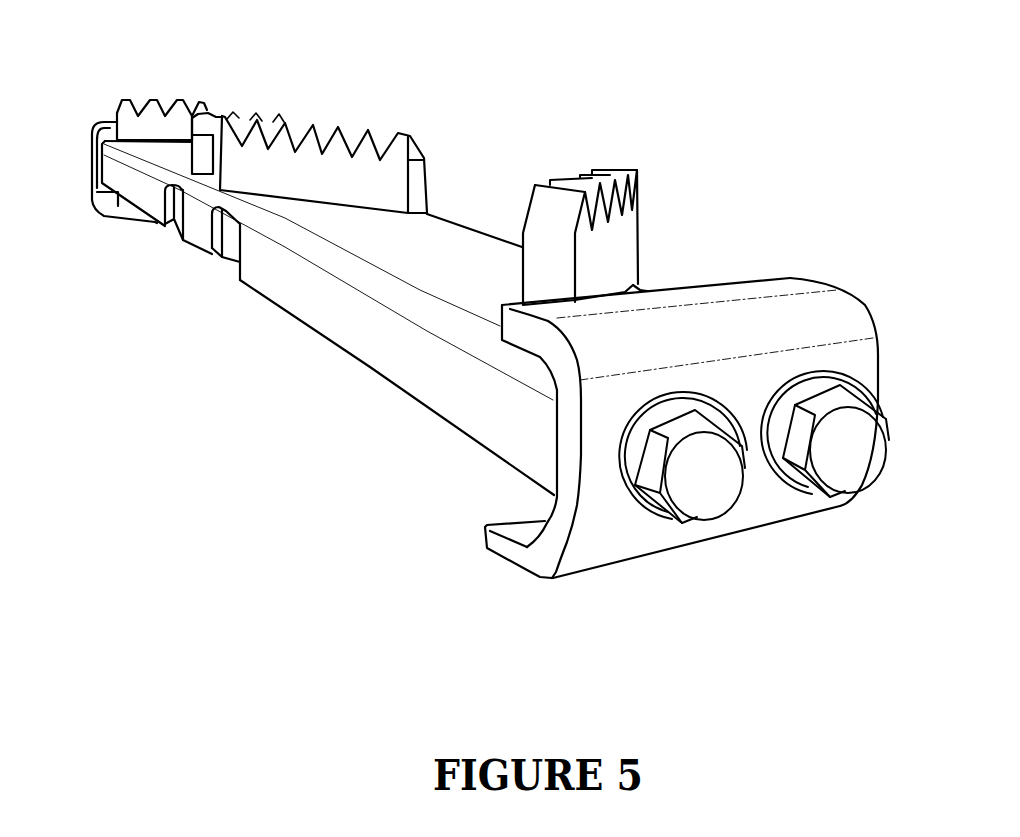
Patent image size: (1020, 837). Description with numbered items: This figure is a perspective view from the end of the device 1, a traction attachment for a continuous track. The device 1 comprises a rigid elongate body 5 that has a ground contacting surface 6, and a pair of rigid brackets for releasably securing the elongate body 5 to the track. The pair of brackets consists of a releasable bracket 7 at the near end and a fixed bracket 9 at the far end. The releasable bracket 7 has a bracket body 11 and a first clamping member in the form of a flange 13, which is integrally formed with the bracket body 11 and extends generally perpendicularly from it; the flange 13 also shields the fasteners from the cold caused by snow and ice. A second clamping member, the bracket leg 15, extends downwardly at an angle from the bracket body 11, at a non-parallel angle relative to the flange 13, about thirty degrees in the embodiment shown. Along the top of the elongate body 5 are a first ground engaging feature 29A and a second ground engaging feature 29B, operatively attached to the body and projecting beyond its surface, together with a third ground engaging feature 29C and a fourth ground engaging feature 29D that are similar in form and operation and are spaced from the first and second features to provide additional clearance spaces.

The device 1 is at (205, 392).
The elongate body 5 is at (425, 392).
The ground contacting surface 6 is at (455, 243).
The releasable bracket 7 is at (815, 333).
The fixed bracket 9 is at (93, 197).
The bracket body 11 is at (567, 503).
The flange 13 is at (847, 293).
The bracket leg 15 is at (512, 555).
The first ground engaging feature 29A is at (213, 118).
The second ground engaging feature 29B is at (242, 178).
The third ground engaging feature 29C is at (125, 118).
The fourth ground engaging feature 29D is at (623, 232).